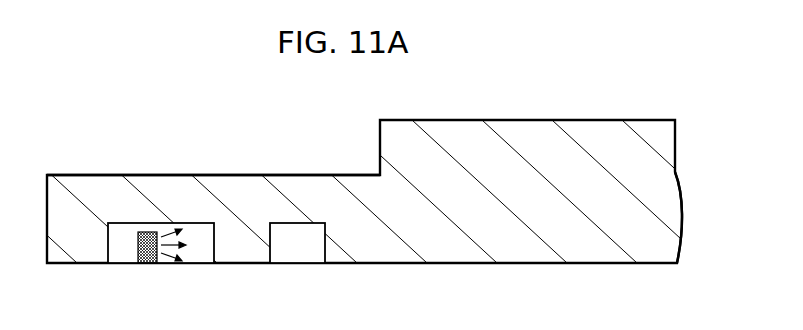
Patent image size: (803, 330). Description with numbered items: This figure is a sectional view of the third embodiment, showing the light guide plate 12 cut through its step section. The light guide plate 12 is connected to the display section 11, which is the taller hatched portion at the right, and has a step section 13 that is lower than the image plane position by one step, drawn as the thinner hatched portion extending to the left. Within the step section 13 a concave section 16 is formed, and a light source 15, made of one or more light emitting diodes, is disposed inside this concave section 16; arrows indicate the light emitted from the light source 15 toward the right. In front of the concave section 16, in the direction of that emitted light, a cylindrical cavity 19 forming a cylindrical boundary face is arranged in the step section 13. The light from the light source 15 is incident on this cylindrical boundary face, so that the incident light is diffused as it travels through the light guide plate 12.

The display section 11 is at (513, 119).
The light guide plate 12 is at (660, 148).
The step section 13 is at (235, 175).
The light source 15 is at (140, 246).
The concave section 16 is at (149, 222).
The cylindrical cavity 19 is at (325, 246).